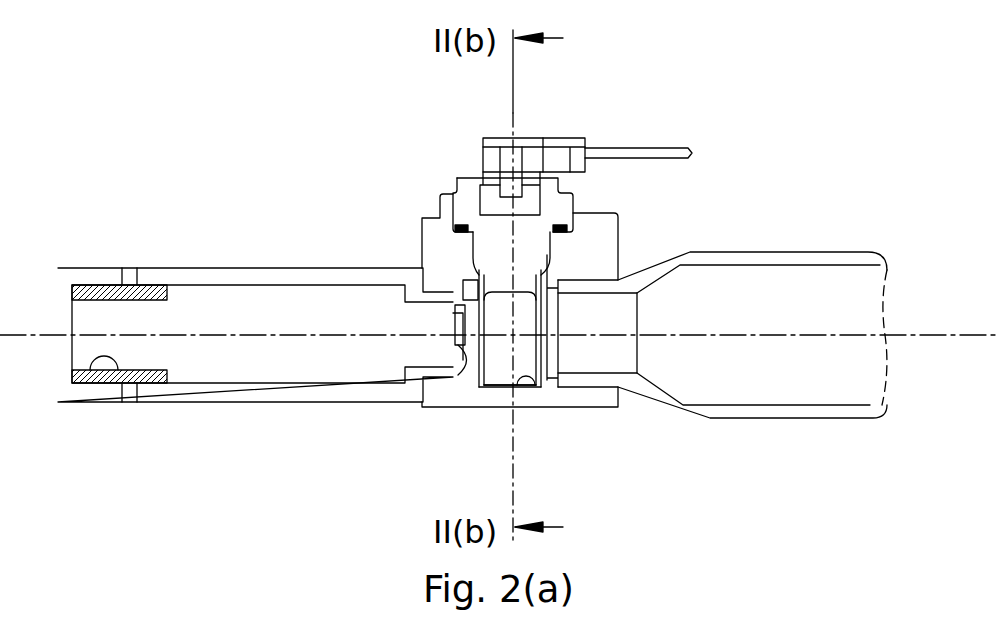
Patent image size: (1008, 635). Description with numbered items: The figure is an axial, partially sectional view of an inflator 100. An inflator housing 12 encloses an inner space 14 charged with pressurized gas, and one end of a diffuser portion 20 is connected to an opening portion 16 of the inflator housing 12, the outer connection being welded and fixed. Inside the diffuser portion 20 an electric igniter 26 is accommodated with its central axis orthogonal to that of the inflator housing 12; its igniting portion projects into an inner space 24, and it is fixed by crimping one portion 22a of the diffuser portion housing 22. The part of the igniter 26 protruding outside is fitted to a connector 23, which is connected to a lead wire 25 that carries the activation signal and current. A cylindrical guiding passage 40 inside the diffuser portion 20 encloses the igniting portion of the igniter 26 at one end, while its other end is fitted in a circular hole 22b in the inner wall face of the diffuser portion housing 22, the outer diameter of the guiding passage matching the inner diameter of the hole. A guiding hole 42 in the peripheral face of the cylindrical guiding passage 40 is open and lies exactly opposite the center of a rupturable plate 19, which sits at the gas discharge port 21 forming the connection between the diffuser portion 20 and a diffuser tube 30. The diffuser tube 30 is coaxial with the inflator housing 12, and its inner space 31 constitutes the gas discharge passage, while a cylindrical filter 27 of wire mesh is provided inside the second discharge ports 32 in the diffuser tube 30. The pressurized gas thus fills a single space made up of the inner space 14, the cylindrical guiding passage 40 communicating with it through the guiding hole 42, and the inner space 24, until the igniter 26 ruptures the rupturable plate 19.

The inflator 100 is at (333, 432).
The inflator housing 12 is at (837, 252).
The inner space 14 is at (803, 314).
The opening portion 16 is at (550, 312).
The rupturable plate 19 is at (473, 372).
The diffuser portion 20 is at (455, 420).
The gas discharge port 21 is at (453, 318).
The diffuser portion housing 22 is at (608, 252).
The one portion of the diffuser portion housing 22a is at (458, 190).
The circular hole 22b is at (528, 390).
The connector 23 is at (548, 137).
The inner space 24 is at (463, 280).
The lead wire 25 is at (663, 150).
The igniter 26 is at (533, 232).
The filter 27 is at (88, 385).
The diffuser tube 30 is at (227, 263).
The inner space 31 is at (251, 328).
The second discharge ports 32 is at (125, 267).
The cylindrical guiding passage 40 is at (543, 348).
The guiding hole 42 is at (493, 390).